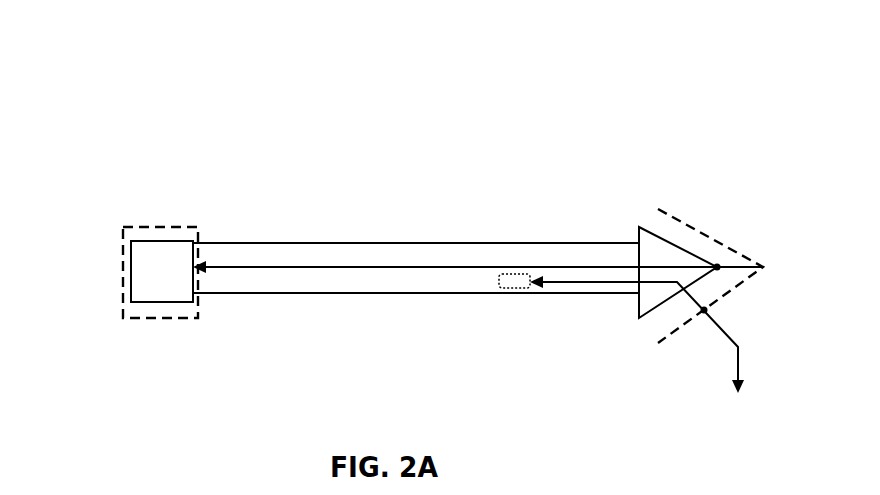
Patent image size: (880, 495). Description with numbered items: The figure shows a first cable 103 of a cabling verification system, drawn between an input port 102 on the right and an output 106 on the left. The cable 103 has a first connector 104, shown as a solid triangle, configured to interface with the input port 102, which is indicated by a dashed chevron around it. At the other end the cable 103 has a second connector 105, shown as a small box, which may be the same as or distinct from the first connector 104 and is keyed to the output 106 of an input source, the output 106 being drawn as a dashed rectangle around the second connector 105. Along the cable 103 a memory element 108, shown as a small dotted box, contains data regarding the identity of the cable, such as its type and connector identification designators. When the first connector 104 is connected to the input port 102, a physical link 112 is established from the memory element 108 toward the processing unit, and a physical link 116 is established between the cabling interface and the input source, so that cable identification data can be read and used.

The input port 102 is at (700, 232).
The cable 103 is at (197, 63).
The first connector 104 is at (650, 252).
The second connector 105 is at (163, 285).
The output 106 is at (155, 225).
The memory element 108 is at (512, 282).
The link 112 is at (567, 283).
The link 116 is at (365, 267).